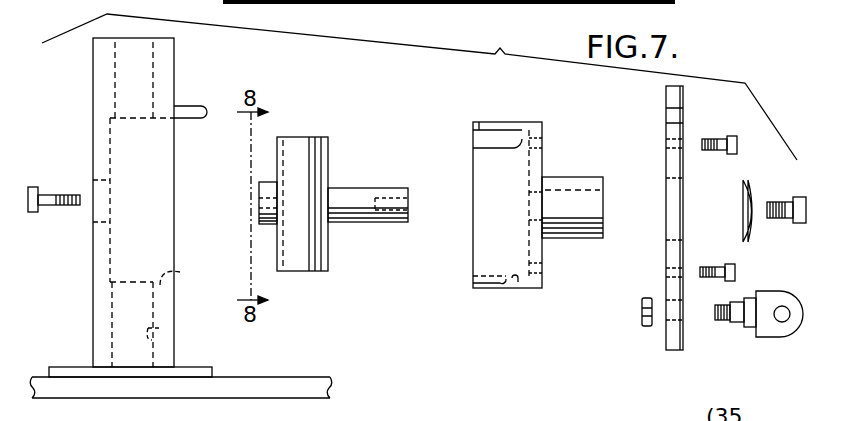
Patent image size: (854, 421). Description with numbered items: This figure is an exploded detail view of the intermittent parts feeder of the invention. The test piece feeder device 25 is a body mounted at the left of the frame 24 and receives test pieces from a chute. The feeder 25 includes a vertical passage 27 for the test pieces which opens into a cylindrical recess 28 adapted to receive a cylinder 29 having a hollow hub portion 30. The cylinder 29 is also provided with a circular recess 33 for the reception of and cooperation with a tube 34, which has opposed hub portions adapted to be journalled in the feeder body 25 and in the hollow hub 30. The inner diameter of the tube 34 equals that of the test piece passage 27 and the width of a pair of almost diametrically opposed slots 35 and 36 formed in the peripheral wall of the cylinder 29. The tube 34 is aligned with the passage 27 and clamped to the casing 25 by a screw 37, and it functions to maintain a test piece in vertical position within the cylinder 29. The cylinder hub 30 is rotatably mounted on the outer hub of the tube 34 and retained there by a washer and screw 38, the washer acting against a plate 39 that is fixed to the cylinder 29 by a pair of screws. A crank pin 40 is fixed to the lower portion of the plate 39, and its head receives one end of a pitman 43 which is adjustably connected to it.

The frame 24 is at (318, 382).
The test piece feeder device 25 is at (97, 305).
The vertical passage 27 is at (150, 80).
The cylindrical recess 28 is at (180, 272).
The cylinder 29 is at (537, 122).
The hollow hub portion 30 is at (565, 177).
The circular recess 33 is at (522, 283).
The tube 34 is at (328, 253).
The slot 35 is at (497, 138).
The slot 36 is at (487, 283).
The screw 37 is at (35, 190).
The washer and screw 38 is at (797, 222).
The plate 39 is at (672, 350).
The crank pin 40 is at (772, 330).
The pitman 43 is at (782, 306).